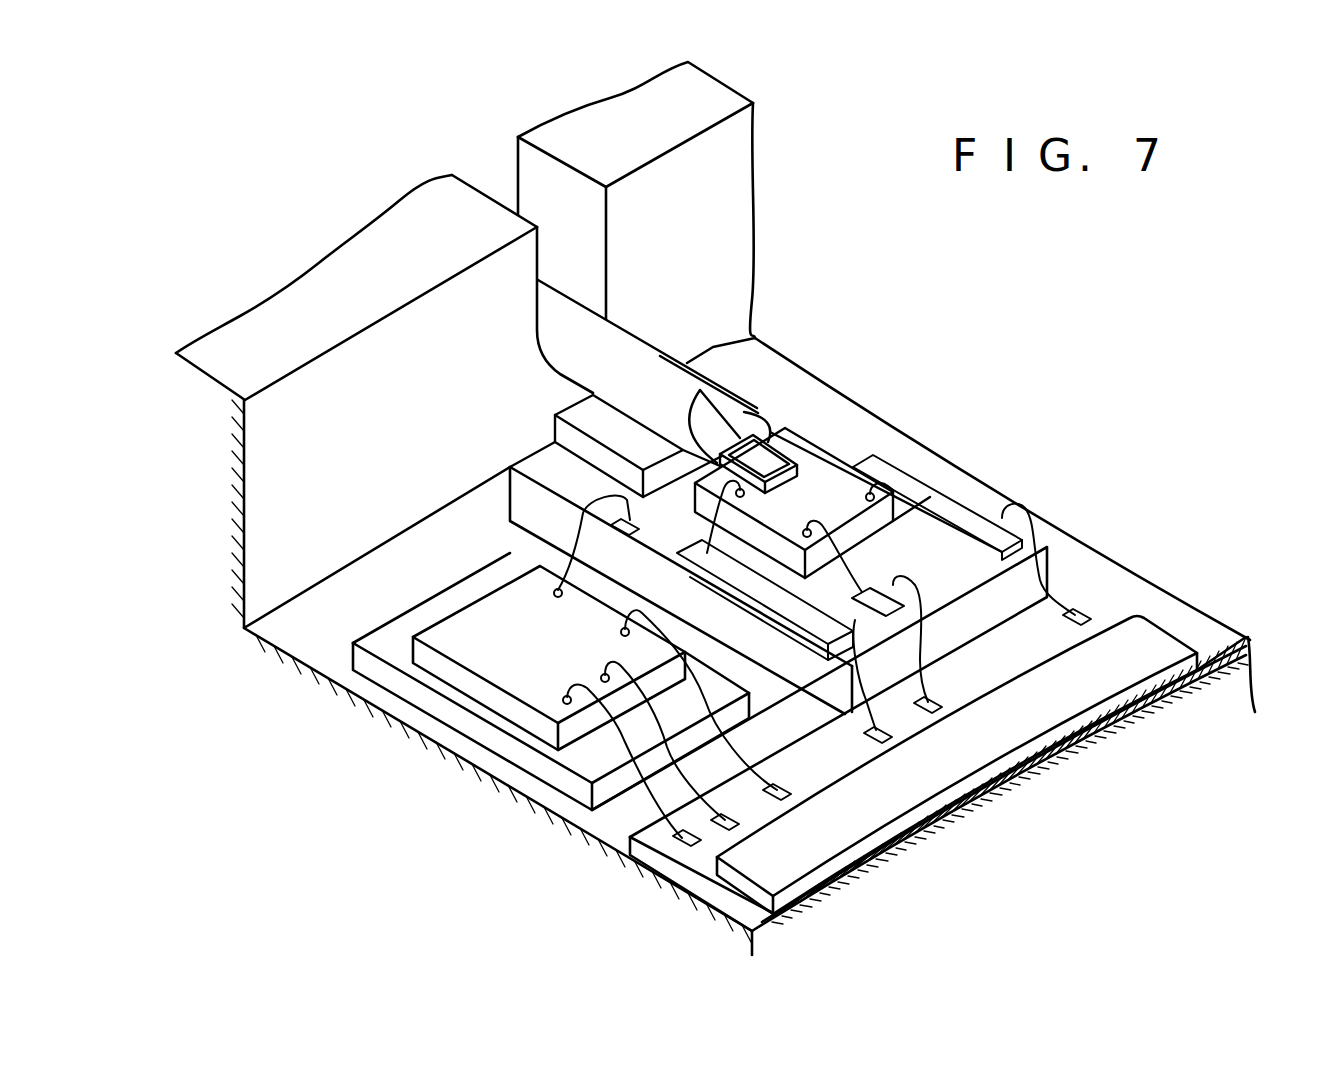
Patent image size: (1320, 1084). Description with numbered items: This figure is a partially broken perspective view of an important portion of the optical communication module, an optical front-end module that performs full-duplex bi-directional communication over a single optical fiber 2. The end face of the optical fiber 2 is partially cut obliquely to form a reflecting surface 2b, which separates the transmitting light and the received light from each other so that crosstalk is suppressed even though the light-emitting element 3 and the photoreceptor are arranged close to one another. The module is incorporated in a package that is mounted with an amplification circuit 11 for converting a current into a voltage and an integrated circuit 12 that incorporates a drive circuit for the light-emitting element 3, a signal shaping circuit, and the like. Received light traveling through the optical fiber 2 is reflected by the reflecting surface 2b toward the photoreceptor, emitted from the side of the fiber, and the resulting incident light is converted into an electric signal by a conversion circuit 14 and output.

The optical fiber 2 is at (620, 352).
The reflecting surface 2b is at (707, 420).
The light-emitting element 3 is at (787, 440).
The amplification circuit 11 is at (458, 643).
The integrated circuit 12 is at (745, 860).
The conversion circuit 14 is at (593, 488).